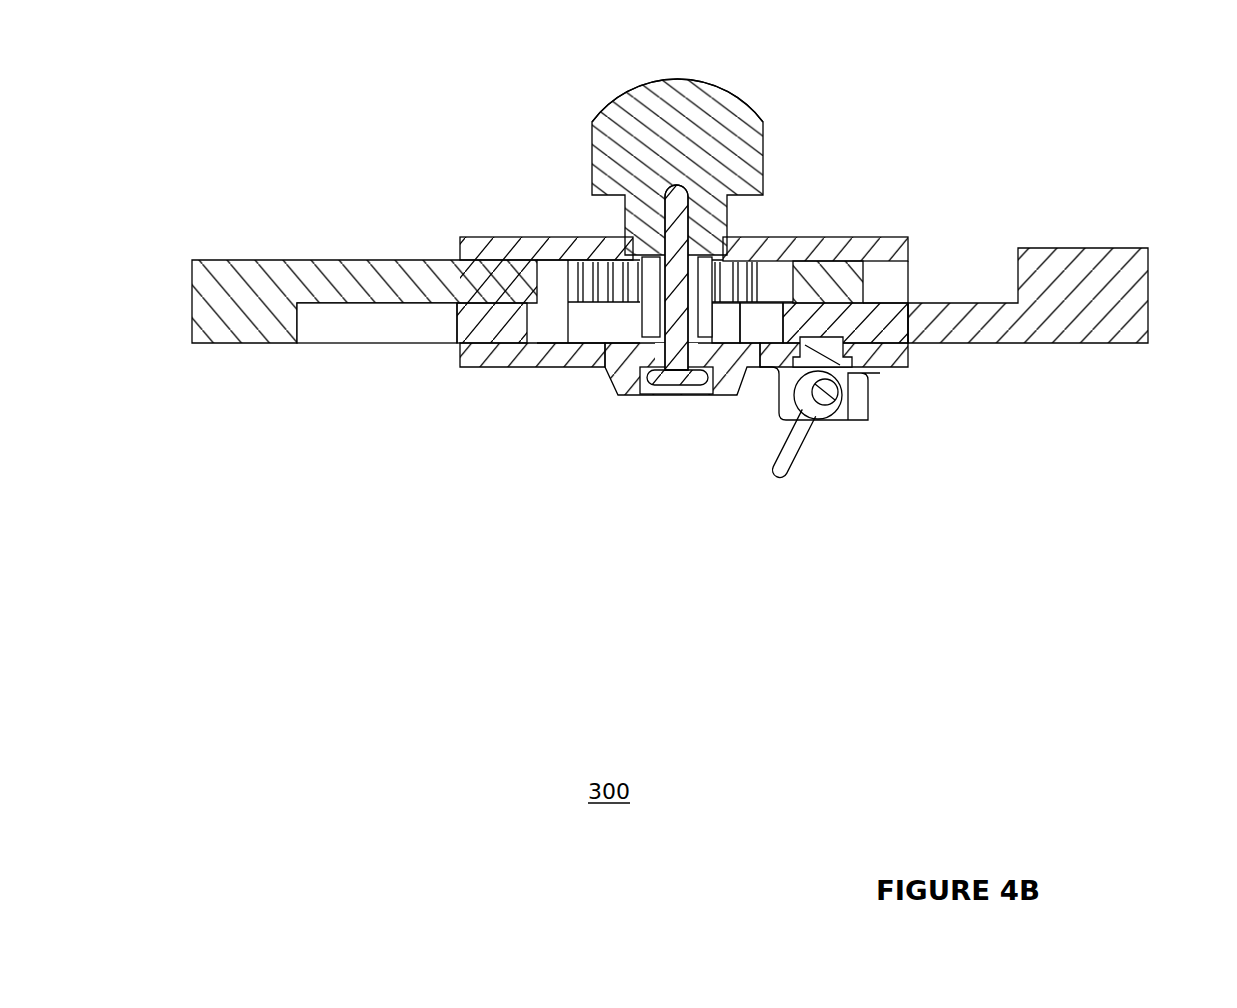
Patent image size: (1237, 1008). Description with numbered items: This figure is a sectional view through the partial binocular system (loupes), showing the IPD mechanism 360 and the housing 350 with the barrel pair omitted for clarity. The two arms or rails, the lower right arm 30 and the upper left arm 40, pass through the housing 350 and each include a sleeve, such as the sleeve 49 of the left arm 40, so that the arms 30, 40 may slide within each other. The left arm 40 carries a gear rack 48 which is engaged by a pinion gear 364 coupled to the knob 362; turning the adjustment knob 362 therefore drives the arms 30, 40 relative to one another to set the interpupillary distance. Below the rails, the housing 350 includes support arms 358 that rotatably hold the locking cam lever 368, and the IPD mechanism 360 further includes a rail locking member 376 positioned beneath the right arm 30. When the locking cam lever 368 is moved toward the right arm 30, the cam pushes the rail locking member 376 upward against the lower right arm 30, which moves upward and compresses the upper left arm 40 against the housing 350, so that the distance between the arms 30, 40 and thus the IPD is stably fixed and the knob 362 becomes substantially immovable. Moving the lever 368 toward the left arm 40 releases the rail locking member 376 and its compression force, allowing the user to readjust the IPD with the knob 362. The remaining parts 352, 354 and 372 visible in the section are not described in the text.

The right arm 30 is at (1152, 297).
The left arm 40 is at (190, 316).
The gear rack 48 is at (575, 266).
The sleeve 49 is at (355, 332).
The housing 350 is at (792, 225).
The nut flange 352 is at (890, 225).
The bushing 354 is at (470, 367).
The support arms 358 is at (770, 398).
The IPD mechanism 360 is at (633, 73).
The knob 362 is at (716, 82).
The pinion gear 364 is at (607, 368).
The locking cam lever 368 is at (780, 472).
The pin 372 is at (672, 382).
The rail locking member 376 is at (850, 366).